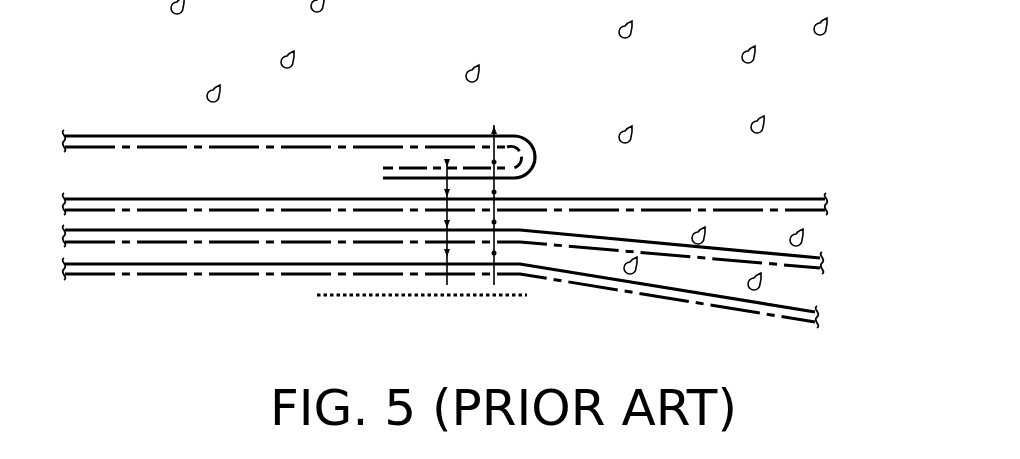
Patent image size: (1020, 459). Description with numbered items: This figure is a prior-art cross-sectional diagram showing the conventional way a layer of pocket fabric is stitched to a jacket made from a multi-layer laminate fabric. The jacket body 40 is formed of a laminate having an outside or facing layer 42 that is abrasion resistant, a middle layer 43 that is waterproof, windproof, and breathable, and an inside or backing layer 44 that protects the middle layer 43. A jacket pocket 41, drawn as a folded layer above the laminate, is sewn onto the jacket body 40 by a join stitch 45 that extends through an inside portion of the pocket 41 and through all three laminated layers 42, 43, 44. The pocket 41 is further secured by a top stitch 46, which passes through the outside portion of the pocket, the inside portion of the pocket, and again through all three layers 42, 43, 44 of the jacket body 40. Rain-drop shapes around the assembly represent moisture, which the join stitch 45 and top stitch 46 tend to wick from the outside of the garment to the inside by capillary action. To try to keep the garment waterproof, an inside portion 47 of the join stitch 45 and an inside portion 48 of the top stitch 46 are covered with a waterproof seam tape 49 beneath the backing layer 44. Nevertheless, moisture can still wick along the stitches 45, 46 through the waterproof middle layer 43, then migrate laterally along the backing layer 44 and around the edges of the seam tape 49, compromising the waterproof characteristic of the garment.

The jacket body 40 is at (689, 192).
The jacket pocket 41 is at (136, 122).
The facing layer 42 is at (833, 208).
The middle layer 43 is at (830, 268).
The backing layer 44 is at (828, 322).
The join stitch 45 is at (438, 184).
The top stitch 46 is at (502, 158).
The inside portion of the join stitch 47 is at (447, 288).
The inside portion of the top stitch 48 is at (494, 288).
The waterproof seam tape 49 is at (318, 302).